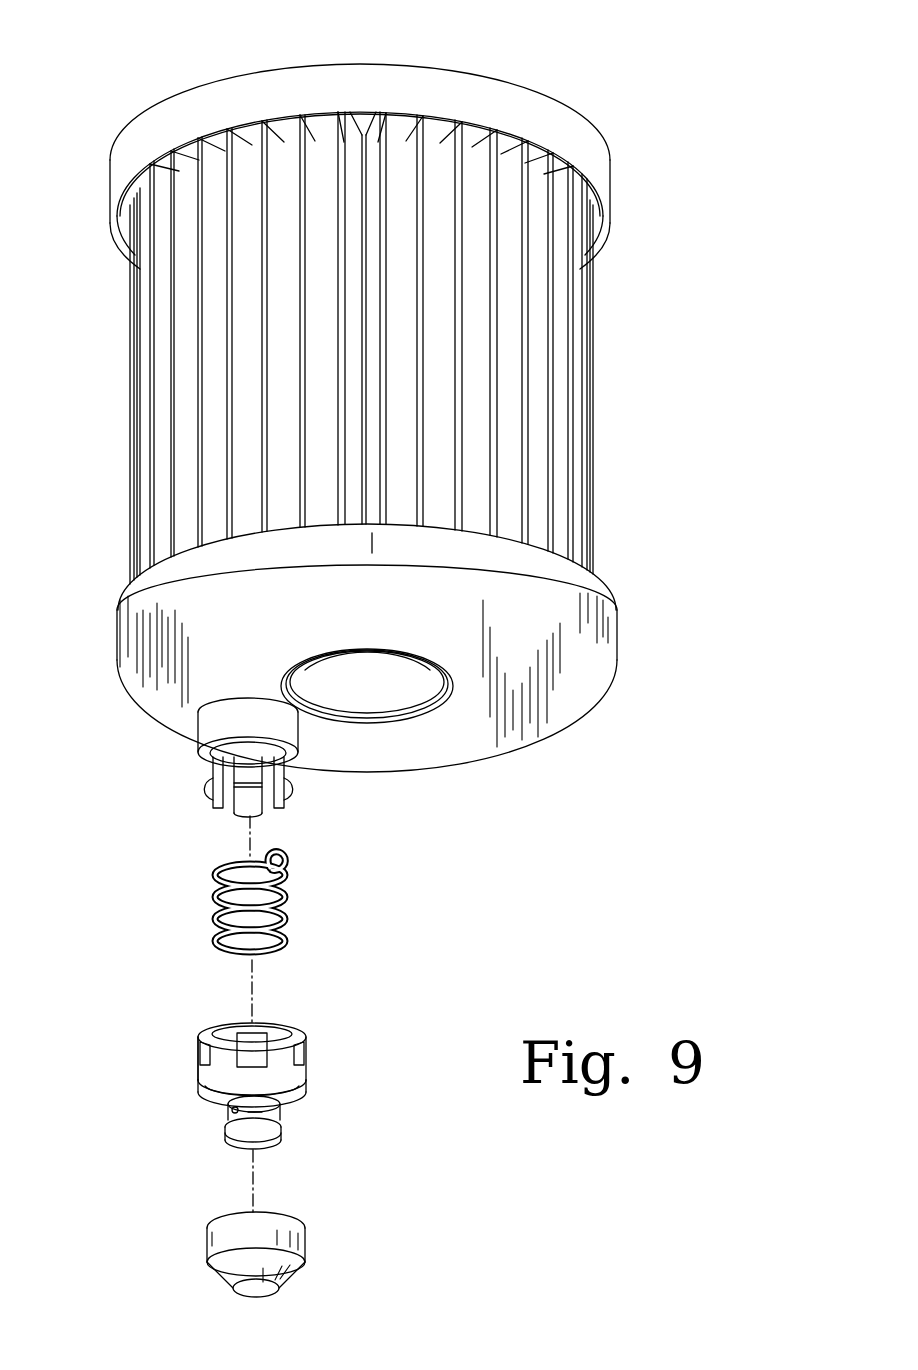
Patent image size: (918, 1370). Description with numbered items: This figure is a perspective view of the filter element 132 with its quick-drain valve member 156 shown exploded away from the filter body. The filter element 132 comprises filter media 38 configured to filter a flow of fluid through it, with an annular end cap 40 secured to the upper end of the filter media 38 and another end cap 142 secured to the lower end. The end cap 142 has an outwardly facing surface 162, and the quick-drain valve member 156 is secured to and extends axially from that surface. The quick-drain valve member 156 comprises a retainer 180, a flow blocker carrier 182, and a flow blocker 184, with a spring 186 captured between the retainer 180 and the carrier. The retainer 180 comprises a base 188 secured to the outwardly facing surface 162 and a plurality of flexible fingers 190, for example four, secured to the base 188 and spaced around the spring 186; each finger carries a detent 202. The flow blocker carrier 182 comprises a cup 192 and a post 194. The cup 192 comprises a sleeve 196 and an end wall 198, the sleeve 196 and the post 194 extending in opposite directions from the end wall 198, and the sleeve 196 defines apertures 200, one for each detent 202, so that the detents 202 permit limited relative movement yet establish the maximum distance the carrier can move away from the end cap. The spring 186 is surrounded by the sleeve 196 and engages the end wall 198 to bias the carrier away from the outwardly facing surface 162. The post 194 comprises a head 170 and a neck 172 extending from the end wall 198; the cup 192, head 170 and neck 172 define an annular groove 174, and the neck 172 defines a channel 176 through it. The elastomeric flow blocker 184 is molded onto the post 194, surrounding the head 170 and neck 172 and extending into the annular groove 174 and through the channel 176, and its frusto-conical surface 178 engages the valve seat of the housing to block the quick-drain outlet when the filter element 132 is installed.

The filter element 132 is at (689, 123).
The end cap 40 is at (419, 70).
The filter media 38 is at (584, 334).
The end cap 142 is at (367, 673).
The outwardly facing surface 162 is at (407, 766).
The retainer 180 is at (223, 764).
The base 188 is at (228, 708).
The detents 202 is at (249, 770).
The flexible fingers 190 is at (268, 752).
The quick-drain valve member 156 is at (294, 1056).
The spring 186 is at (281, 907).
The flow blocker carrier 182 is at (263, 1083).
The cup 192 is at (285, 1038).
The sleeve 196 is at (218, 1037).
The apertures 200 is at (237, 1033).
The annular groove 174 is at (200, 1086).
The end wall 198 is at (283, 1108).
The channel 176 is at (232, 1108).
The neck 172 is at (225, 1122).
The head 170 is at (234, 1142).
The post 194 is at (264, 1112).
The flow blocker 184 is at (296, 1242).
The frusto-conical surface 178 is at (298, 1277).